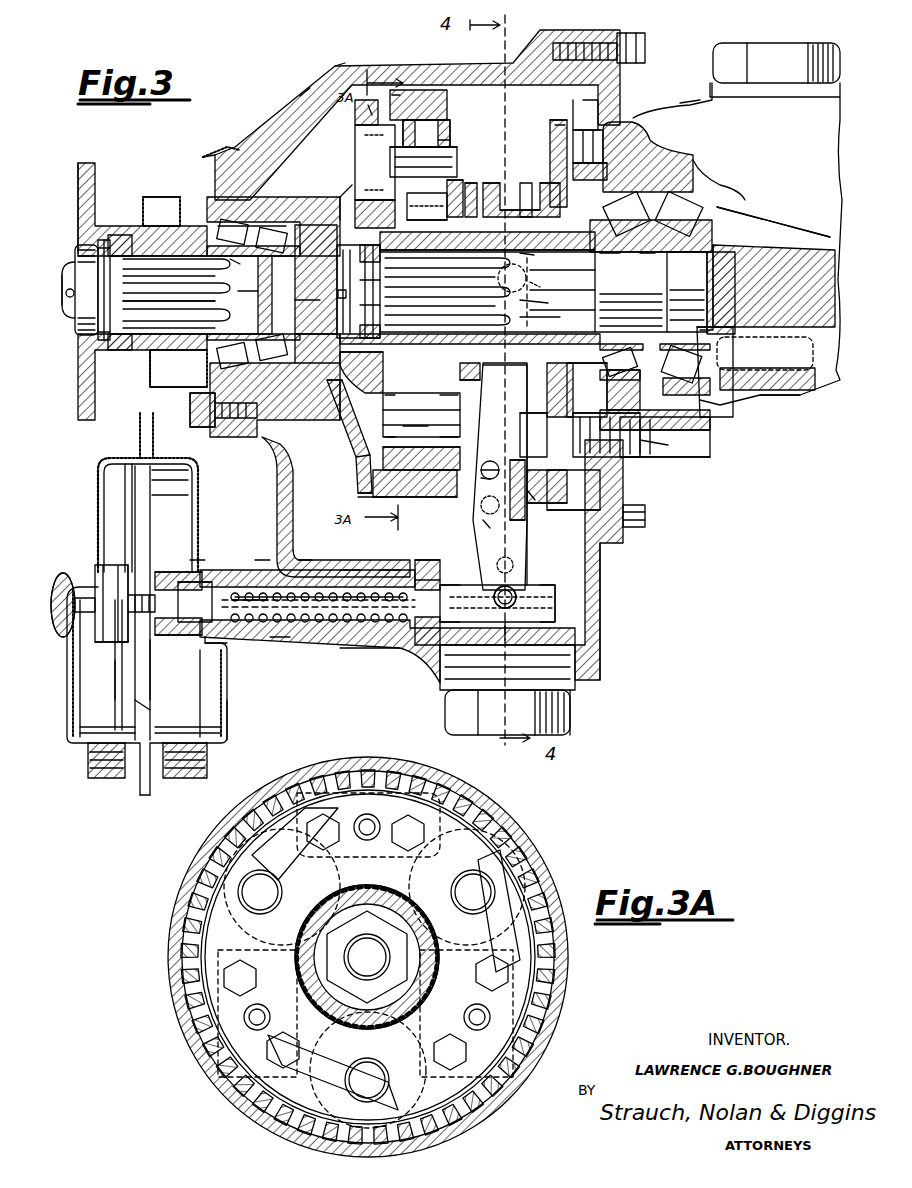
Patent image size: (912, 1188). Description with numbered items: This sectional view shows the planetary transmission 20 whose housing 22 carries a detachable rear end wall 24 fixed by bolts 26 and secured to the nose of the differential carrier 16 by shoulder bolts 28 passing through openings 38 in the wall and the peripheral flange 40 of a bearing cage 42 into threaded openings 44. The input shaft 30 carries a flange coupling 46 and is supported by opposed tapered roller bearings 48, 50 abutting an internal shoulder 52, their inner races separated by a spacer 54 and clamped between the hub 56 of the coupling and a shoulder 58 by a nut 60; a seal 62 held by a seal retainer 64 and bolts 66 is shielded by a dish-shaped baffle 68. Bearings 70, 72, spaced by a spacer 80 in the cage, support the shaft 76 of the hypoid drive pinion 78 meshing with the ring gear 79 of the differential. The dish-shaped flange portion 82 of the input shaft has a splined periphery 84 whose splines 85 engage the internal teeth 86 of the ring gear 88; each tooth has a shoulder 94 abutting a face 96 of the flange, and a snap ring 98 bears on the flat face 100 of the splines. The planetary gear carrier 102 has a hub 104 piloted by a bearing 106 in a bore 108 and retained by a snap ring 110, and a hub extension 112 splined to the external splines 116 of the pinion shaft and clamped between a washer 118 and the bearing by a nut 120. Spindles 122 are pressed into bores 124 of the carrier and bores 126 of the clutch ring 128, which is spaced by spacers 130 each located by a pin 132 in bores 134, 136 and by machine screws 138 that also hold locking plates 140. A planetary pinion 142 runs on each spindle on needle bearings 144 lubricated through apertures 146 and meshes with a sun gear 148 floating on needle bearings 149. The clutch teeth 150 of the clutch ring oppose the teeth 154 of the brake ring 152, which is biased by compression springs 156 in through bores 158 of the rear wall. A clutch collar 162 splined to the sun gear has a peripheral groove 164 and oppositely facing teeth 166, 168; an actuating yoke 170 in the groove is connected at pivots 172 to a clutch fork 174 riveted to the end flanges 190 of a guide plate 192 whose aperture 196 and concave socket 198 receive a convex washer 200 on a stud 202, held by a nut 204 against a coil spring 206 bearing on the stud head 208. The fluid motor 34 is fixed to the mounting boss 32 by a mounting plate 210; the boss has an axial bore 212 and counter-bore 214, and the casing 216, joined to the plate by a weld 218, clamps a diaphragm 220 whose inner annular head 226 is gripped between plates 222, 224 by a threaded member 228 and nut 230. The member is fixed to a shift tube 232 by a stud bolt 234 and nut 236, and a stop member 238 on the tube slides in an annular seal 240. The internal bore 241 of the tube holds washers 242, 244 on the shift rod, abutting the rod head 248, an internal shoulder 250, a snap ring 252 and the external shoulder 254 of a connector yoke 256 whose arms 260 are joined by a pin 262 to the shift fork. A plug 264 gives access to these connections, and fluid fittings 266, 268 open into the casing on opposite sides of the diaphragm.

In FIG. 3, the differential carrier 16 is at (680, 100).
In FIG. 3, the planetary transmission 20 is at (318, 60).
In FIG. 3, the housing 22 is at (300, 98).
In FIG. 3, the rear end wall 24 is at (612, 545).
In FIG. 3, the bolts 26 is at (645, 50).
In FIG. 3, the shoulder bolts 28 is at (668, 445).
In FIG. 3, the input shaft 30 is at (248, 283).
In FIG. 3, the mounting boss 32 is at (380, 650).
In FIG. 3, the clutch actuating fluid motor 34 is at (94, 471).
In FIG. 3, the openings 38 is at (606, 426).
In FIG. 3, the peripheral flange 40 is at (645, 460).
In FIG. 3, the bearing cage 42 is at (715, 414).
In FIG. 3, the threaded openings 44 is at (705, 428).
In FIG. 3, the flange coupling 46 is at (95, 195).
In FIG. 3, the tapered roller bearing 48 is at (222, 296).
In FIG. 3, the tapered roller bearing 50 is at (303, 305).
In FIG. 3, the internal shoulder 52 is at (258, 220).
In FIG. 3, the annular spacer 54 is at (250, 257).
In FIG. 3, the hub 56 is at (150, 372).
In FIG. 3, the shoulder 58 is at (295, 258).
In FIG. 3, the nut 60 is at (64, 250).
In FIG. 3, the seal 62 is at (168, 198).
In FIG. 3, the seal retainer 64 is at (203, 157).
In FIG. 3, the bolts 66 is at (190, 410).
In FIG. 3, the baffle 68 is at (155, 388).
In FIG. 3, the tapered roller bearing 70 is at (608, 255).
In FIG. 3, the tapered roller bearing 72 is at (680, 255).
In FIG. 3, the pinion shaft 76 is at (548, 303).
In FIG. 3A, the pinion shaft 76 is at (354, 970).
In FIG. 3, the hypoid differential drive pinion 78 is at (790, 240).
In FIG. 3, the ring gear 79 is at (795, 370).
In FIG. 3, the annular spacer 80 is at (646, 263).
In FIG. 3, the flange portion 82 is at (330, 412).
In FIG. 3, the splined periphery 84 is at (355, 458).
In FIG. 3, the splines 85 is at (360, 485).
In FIG. 3, the internal teeth 86 is at (415, 490).
In FIG. 3A, the internal teeth 86 is at (195, 1065).
In FIG. 3, the ring gear 88 is at (445, 490).
In FIG. 3A, the ring gear 88 is at (215, 1092).
In FIG. 3, the shoulder 94 is at (376, 503).
In FIG. 3, the face 96 is at (361, 390).
In FIG. 3, the snap ring 98 is at (355, 505).
In FIG. 3, the flat face 100 is at (368, 110).
In FIG. 3, the planetary gear carrier 102 is at (410, 235).
In FIG. 3A, the hub 104 is at (300, 920).
In FIG. 3, the bearing 106 is at (340, 393).
In FIG. 3, the bore 108 is at (340, 195).
In FIG. 3, the snap ring 110 is at (345, 175).
In FIG. 3, the hub extension 112 is at (534, 255).
In FIG. 3, the external splines 116 is at (372, 305).
In FIG. 3, the washer 118 is at (370, 290).
In FIG. 3, the nut 120 is at (335, 370).
In FIG. 3A, the nut 120 is at (367, 957).
In FIG. 3, the spindles 122 is at (415, 418).
In FIG. 3A, the spindles 122 is at (262, 885).
In FIG. 3, the bores 124 is at (397, 403).
In FIG. 3, the bores 126 is at (439, 432).
In FIG. 3, the clutch ring 128 is at (440, 140).
In FIG. 3, the spacer 130 is at (455, 190).
In FIG. 3A, the spacer 130 is at (360, 865).
In FIG. 3, the pin 132 is at (423, 156).
In FIG. 3A, the pin 132 is at (462, 1018).
In FIG. 3, the bore 134 is at (423, 129).
In FIG. 3, the bore 136 is at (470, 182).
In FIG. 3, the machine screws 138 is at (372, 218).
In FIG. 3A, the machine screws 138 is at (460, 1045).
In FIG. 3, the locking plates 140 is at (395, 118).
In FIG. 3A, the locking plates 140 is at (250, 835).
In FIG. 3, the planetary pinion 142 is at (393, 432).
In FIG. 3A, the planetary pinion 142 is at (195, 860).
In FIG. 3, the needle bearings 144 is at (443, 403).
In FIG. 3, the apertures 146 is at (430, 478).
In FIG. 3, the sun gear 148 is at (446, 220).
In FIG. 3A, the sun gear 148 is at (400, 886).
In FIG. 3, the needle bearings 149 is at (555, 317).
In FIG. 3, the clutch teeth 150 is at (468, 382).
In FIG. 3, the brake ring 152 is at (552, 175).
In FIG. 3, the teeth 154 is at (575, 375).
In FIG. 3, the compression springs 156 is at (565, 125).
In FIG. 3, the through bores 158 is at (588, 130).
In FIG. 3, the clutch collar 162 is at (490, 183).
In FIG. 3, the peripheral groove 164 is at (525, 200).
In FIG. 3, the teeth 166 is at (550, 160).
In FIG. 3, the teeth 168 is at (575, 180).
In FIG. 3, the actuating yoke 170 is at (505, 391).
In FIG. 3, the pivots 172 is at (540, 285).
In FIG. 3, the clutch fork 174 is at (536, 550).
In FIG. 3, the end flanges 190 is at (490, 528).
In FIG. 3, the guide plate 192 is at (520, 525).
In FIG. 3, the aperture 196 is at (493, 462).
In FIG. 3, the concave socket 198 is at (535, 500).
In FIG. 3, the washer 200 is at (515, 458).
In FIG. 3, the stud 202 is at (547, 490).
In FIG. 3, the nut 204 is at (481, 470).
In FIG. 3, the coil spring 206 is at (547, 437).
In FIG. 3, the head 208 is at (578, 487).
In FIG. 3, the mounting plate 210 is at (278, 645).
In FIG. 3, the axial bore 212 is at (350, 568).
In FIG. 3, the counter-bore 214 is at (305, 557).
In FIG. 3, the casing 216 is at (227, 742).
In FIG. 3, the weld 218 is at (262, 560).
In FIG. 3, the diaphragm 220 is at (153, 790).
In FIG. 3, the plate 222 is at (115, 680).
In FIG. 3, the plate 224 is at (153, 667).
In FIG. 3, the inner annular head 226 is at (148, 705).
In FIG. 3, the threaded member 228 is at (168, 572).
In FIG. 3, the nut 230 is at (88, 570).
In FIG. 3, the shift tube 232 is at (200, 560).
In FIG. 3, the stud bolt 234 is at (195, 596).
In FIG. 3, the nut 236 is at (100, 645).
In FIG. 3, the stop member 238 is at (188, 637).
In FIG. 3, the annular seal 240 is at (225, 643).
In FIG. 3, the internal bore 241 is at (388, 568).
In FIG. 3, the washer 242 is at (319, 600).
In FIG. 3, the washer 244 is at (418, 575).
In FIG. 3, the head 248 is at (250, 600).
In FIG. 3, the internal shoulder 250 is at (132, 565).
In FIG. 3, the snap ring 252 is at (440, 585).
In FIG. 3, the external shoulder 254 is at (440, 625).
In FIG. 3, the connector yoke 256 is at (518, 630).
In FIG. 3, the arms 260 is at (548, 596).
In FIG. 3, the pin 262 is at (520, 590).
In FIG. 3, the plug 264 is at (575, 718).
In FIG. 3, the fluid fitting 266 is at (88, 768).
In FIG. 3, the fluid fitting 268 is at (207, 770).